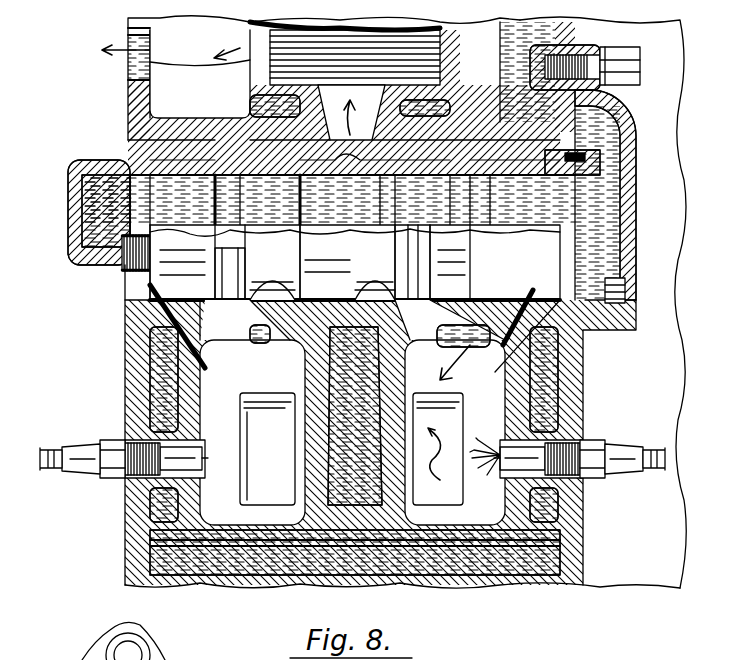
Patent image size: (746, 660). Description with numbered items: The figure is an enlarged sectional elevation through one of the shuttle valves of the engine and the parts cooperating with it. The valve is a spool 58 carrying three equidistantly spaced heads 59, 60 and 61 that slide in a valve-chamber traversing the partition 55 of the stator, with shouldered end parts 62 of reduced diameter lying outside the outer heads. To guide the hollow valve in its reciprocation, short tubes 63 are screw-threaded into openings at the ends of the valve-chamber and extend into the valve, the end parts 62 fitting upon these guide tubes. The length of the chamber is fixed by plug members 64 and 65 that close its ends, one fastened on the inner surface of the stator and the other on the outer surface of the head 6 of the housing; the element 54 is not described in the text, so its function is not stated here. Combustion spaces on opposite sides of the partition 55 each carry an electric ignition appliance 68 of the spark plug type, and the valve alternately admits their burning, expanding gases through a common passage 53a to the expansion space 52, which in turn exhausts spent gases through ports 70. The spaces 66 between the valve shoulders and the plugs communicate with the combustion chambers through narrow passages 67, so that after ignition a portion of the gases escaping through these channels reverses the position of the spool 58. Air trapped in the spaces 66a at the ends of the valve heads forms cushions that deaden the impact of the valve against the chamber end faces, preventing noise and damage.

The head section 6 is at (140, 100).
The expansion space 52 is at (352, 412).
The common passage 53a is at (300, 97).
The valve casing 54 is at (240, 300).
The partition 55 is at (250, 118).
The spool 58 is at (272, 262).
The head 59 is at (235, 262).
The head 60 is at (347, 262).
The head 61 is at (430, 256).
The shouldered end part 62 is at (205, 246).
The guide tube 63 is at (135, 250).
The plug member 64 is at (148, 158).
The plug member 65 is at (638, 143).
The space 66 is at (210, 288).
The air space 66a is at (634, 292).
The narrow passage 67 is at (195, 335).
The electric ignition appliance 68 is at (84, 456).
The exhaust port 70 is at (128, 60).